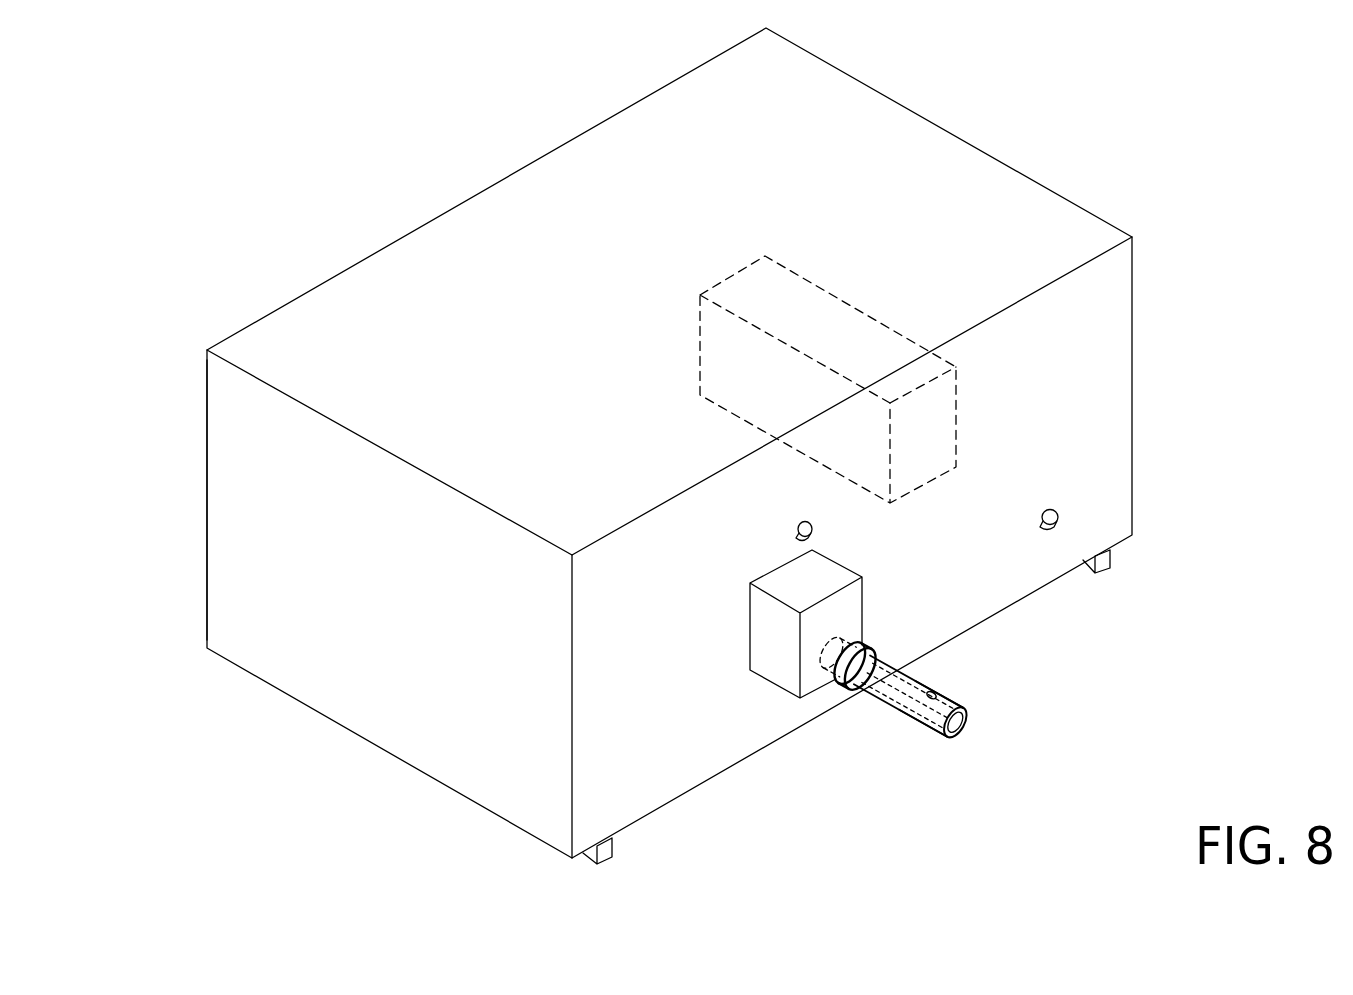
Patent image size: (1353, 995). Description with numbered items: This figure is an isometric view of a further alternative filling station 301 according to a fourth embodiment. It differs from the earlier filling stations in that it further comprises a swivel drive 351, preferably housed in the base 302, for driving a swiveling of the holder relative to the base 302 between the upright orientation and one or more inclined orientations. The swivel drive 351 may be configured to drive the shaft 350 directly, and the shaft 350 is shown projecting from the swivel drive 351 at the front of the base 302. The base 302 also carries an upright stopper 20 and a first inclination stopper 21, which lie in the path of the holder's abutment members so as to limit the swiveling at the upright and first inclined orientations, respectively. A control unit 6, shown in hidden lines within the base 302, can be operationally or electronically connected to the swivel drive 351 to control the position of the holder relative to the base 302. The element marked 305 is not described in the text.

The further alternative filling station 301 is at (337, 178).
The base 302 is at (231, 541).
The control unit 6 is at (860, 330).
The upright stopper 20 is at (795, 523).
The first inclination stopper 21 is at (1055, 530).
The swivel drive 351 is at (763, 627).
The shaft 350 is at (946, 689).
The nozzle tube 305 is at (915, 707).